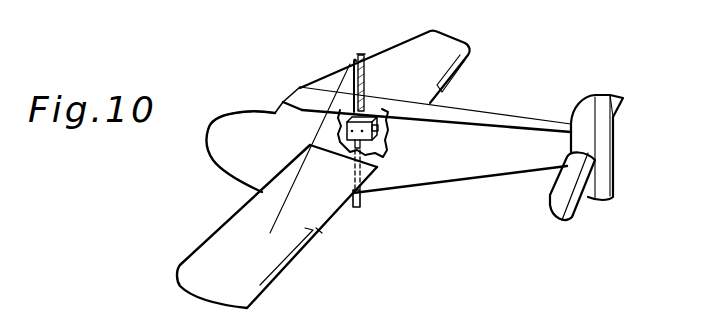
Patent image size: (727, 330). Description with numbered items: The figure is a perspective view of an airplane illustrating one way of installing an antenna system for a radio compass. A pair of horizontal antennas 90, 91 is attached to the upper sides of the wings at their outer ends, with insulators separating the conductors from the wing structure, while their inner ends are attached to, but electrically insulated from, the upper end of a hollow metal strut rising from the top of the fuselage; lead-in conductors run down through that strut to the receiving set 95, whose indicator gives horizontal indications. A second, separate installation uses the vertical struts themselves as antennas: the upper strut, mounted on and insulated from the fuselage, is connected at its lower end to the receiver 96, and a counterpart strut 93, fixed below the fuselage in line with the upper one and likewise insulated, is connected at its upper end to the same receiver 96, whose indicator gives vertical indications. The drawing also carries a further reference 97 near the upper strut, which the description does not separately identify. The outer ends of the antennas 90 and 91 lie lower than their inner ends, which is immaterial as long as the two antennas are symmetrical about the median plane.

The horizontal antenna 90 is at (270, 233).
The horizontal antenna 91 is at (418, 75).
The strut 93 is at (361, 203).
The receiving set 95 is at (347, 130).
The receiver 96 is at (378, 128).
The mast 97 is at (353, 65).